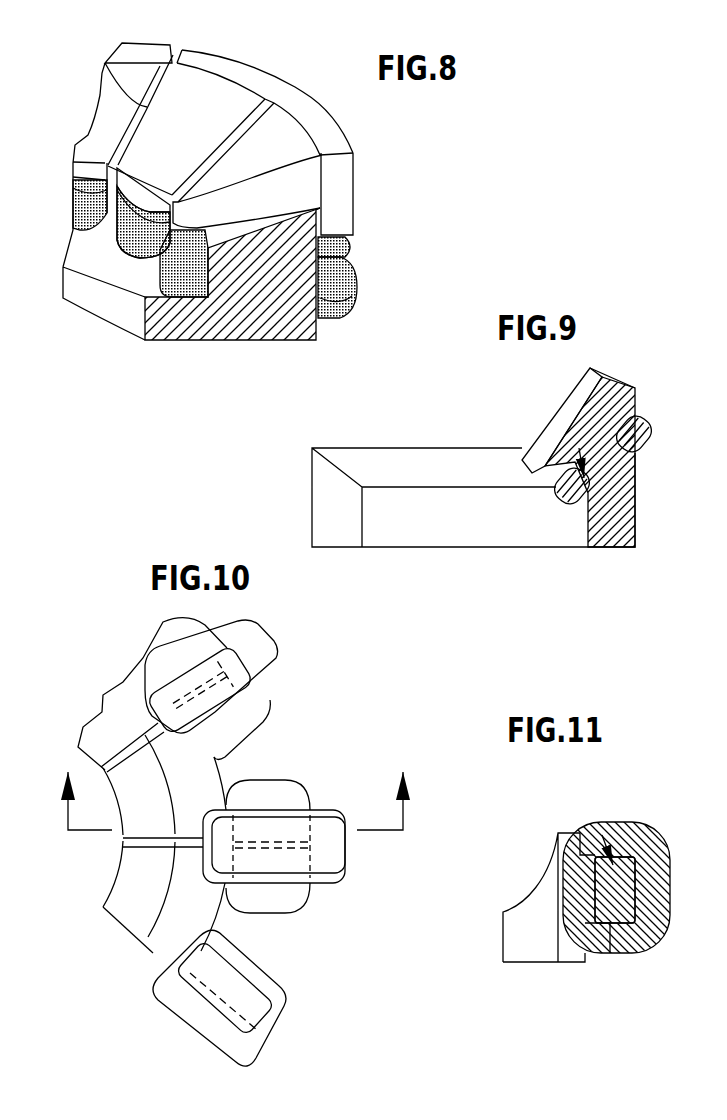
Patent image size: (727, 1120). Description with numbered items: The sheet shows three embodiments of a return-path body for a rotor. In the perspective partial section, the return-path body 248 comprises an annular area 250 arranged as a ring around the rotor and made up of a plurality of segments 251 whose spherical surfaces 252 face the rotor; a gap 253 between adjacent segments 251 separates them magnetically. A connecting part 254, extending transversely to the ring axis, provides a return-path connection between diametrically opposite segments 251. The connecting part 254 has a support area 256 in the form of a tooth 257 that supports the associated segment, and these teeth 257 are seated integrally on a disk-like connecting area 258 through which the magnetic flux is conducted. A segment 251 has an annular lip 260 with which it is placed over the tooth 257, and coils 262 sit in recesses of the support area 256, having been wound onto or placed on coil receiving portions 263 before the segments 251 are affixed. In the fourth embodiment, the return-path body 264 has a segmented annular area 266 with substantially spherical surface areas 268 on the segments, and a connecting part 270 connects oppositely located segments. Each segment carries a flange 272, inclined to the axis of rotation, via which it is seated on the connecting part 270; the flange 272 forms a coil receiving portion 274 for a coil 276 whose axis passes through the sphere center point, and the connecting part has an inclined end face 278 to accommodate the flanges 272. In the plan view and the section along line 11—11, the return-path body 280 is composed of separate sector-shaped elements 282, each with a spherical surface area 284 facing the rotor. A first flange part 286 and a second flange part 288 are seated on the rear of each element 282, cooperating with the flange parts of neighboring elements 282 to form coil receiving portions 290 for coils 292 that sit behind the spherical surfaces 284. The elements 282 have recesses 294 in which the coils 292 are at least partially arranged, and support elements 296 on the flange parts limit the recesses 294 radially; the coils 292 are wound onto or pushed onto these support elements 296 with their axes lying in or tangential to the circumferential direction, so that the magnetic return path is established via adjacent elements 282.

In FIG. 8, the return-path body 248 is at (363, 253).
In FIG. 8, the annular area 250 is at (367, 197).
In FIG. 8, the segments 251 is at (217, 90).
In FIG. 8, the spherical surfaces 252 is at (245, 107).
In FIG. 8, the gap 253 is at (143, 107).
In FIG. 8, the connecting part 254 is at (288, 313).
In FIG. 8, the support area 256 is at (220, 263).
In FIG. 8, the tooth 257 is at (93, 262).
In FIG. 8, the connecting area 258 is at (177, 312).
In FIG. 8, the annular lip 260 is at (346, 222).
In FIG. 8, the coils 262 is at (360, 297).
In FIG. 8, the coil receiving portions 263 is at (330, 312).
In FIG. 9, the return-path body 264 is at (645, 372).
In FIG. 9, the segmented annular area 266 is at (617, 388).
In FIG. 9, the spherical surface areas 268 is at (583, 400).
In FIG. 9, the connecting part 270 is at (633, 533).
In FIG. 9, the flange 272 is at (593, 433).
In FIG. 9, the coil receiving portion 274 is at (562, 462).
In FIG. 9, the coil 276 is at (577, 493).
In FIG. 9, the inclined end face 278 is at (637, 490).
In FIG. 10, the return-path body 280 is at (368, 782).
In FIG. 10, the elements 282 is at (128, 930).
In FIG. 10, the spherical surface area 284 is at (112, 897).
In FIG. 11, the spherical surface area 284 is at (533, 893).
In FIG. 10, the first flange part 286 is at (290, 887).
In FIG. 10, the second flange part 288 is at (262, 792).
In FIG. 11, the second flange part 288 is at (605, 832).
In FIG. 10, the coil receiving portions 290 is at (308, 787).
In FIG. 10, the coils 292 is at (253, 643).
In FIG. 11, the coils 292 is at (650, 845).
In FIG. 10, the recesses 294 is at (175, 1012).
In FIG. 10, the support elements 296 is at (272, 1035).
In FIG. 11, the support elements 296 is at (607, 958).
In FIG. 10, the line 11— 11 is at (227, 818).